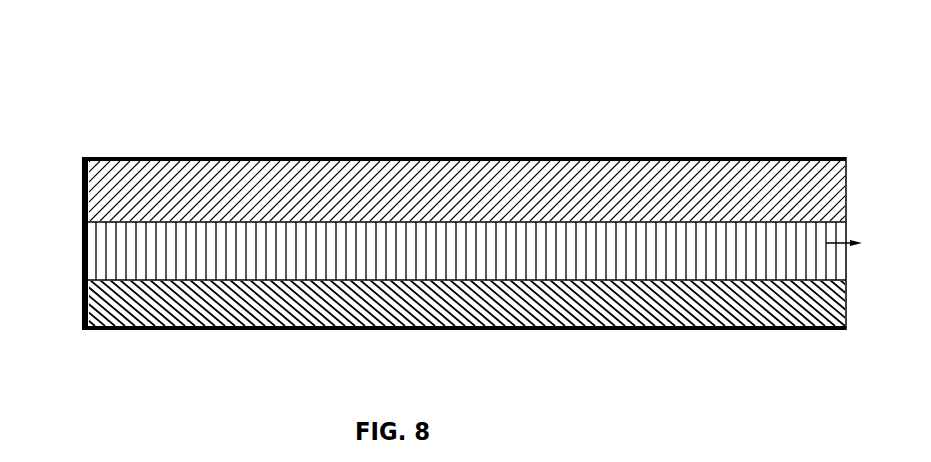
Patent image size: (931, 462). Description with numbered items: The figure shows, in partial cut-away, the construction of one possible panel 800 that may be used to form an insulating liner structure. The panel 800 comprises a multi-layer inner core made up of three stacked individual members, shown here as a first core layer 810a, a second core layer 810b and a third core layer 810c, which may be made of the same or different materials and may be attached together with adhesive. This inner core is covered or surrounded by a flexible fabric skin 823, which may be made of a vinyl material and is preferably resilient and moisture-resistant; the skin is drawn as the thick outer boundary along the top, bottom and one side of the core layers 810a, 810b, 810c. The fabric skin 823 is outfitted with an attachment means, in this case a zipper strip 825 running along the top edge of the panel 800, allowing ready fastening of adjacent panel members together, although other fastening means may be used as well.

The panel 800 is at (150, 58).
The zipper strip 825 is at (272, 157).
The flexible fabric skin 823 is at (72, 222).
The inner core layer 810a is at (420, 209).
The inner core layer 810b is at (420, 262).
The inner core layer 810c is at (420, 318).